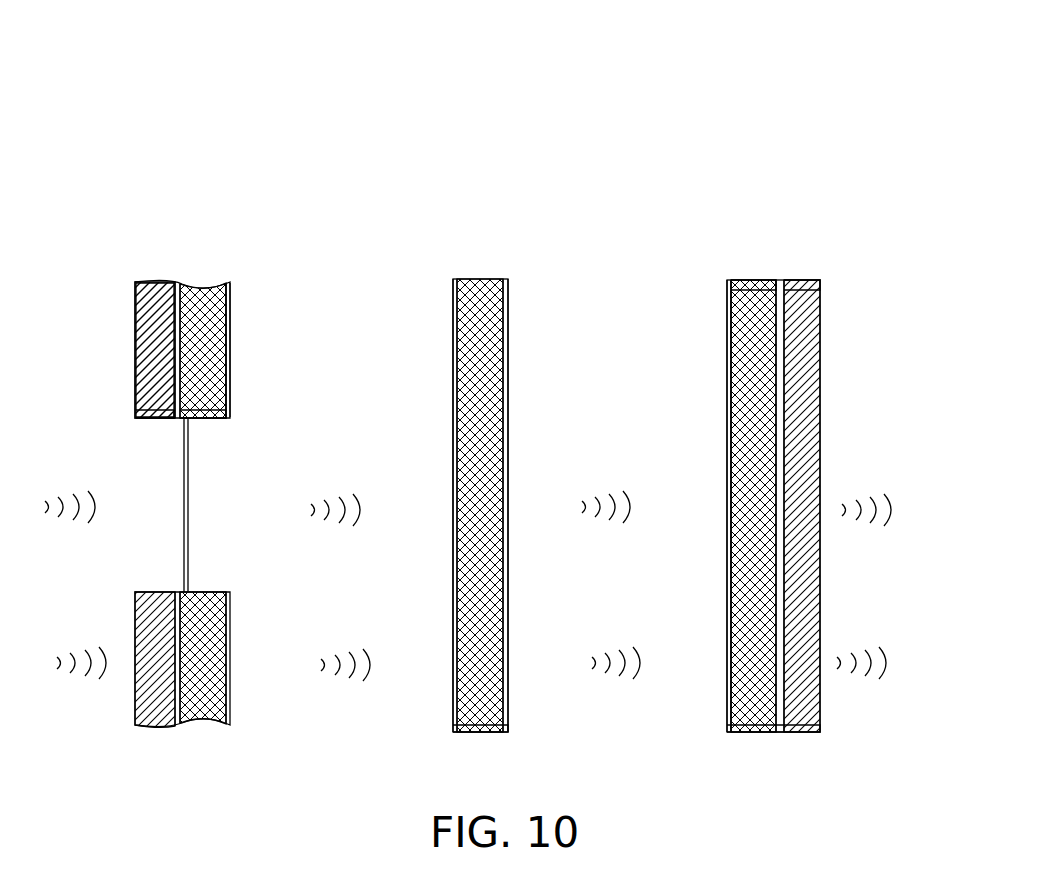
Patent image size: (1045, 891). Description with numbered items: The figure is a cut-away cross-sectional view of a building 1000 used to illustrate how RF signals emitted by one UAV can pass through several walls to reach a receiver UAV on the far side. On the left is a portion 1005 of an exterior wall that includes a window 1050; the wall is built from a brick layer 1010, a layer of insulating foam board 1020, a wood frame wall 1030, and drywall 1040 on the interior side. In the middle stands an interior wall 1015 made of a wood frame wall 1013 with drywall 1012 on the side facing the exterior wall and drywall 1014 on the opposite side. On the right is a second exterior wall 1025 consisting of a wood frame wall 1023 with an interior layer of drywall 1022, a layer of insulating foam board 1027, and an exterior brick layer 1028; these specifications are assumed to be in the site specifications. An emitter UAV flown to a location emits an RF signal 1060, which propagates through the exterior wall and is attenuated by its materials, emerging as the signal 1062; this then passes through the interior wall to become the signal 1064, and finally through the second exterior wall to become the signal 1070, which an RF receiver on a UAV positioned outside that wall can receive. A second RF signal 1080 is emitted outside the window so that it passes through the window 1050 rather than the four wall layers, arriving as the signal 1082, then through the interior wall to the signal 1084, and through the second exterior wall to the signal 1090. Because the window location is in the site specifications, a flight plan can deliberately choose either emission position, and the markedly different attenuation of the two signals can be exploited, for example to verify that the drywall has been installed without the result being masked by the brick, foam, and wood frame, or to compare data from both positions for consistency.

The building 1000 is at (880, 96).
The portion of exterior wall 1005 is at (186, 266).
The brick layer 1010 is at (135, 342).
The drywall 1040 is at (230, 342).
The layer of insulating foam board 1020 is at (172, 420).
The wood frame wall 1030 is at (204, 420).
The window 1050 is at (184, 540).
The interior wall 1015 is at (487, 266).
The drywall 1012 is at (453, 362).
The drywall 1014 is at (508, 362).
The wood frame wall 1013 is at (480, 732).
The exterior wall 1025 is at (790, 266).
The drywall 1022 is at (727, 362).
The wood frame wall 1023 is at (756, 280).
The exterior brick layer 1028 is at (820, 348).
The layer of insulating foam board 1027 is at (780, 732).
The second RF signal 1080 is at (66, 487).
The RF signal after window 1082 is at (333, 490).
The RF signal 1060 is at (77, 643).
The RF signal after exterior wall 1062 is at (341, 648).
The RF signal after interior wall 1084 is at (603, 490).
The RF signal after interior wall 1064 is at (615, 646).
The RF signal after second exterior wall 1090 is at (865, 491).
The RF signal after second exterior wall 1070 is at (865, 644).